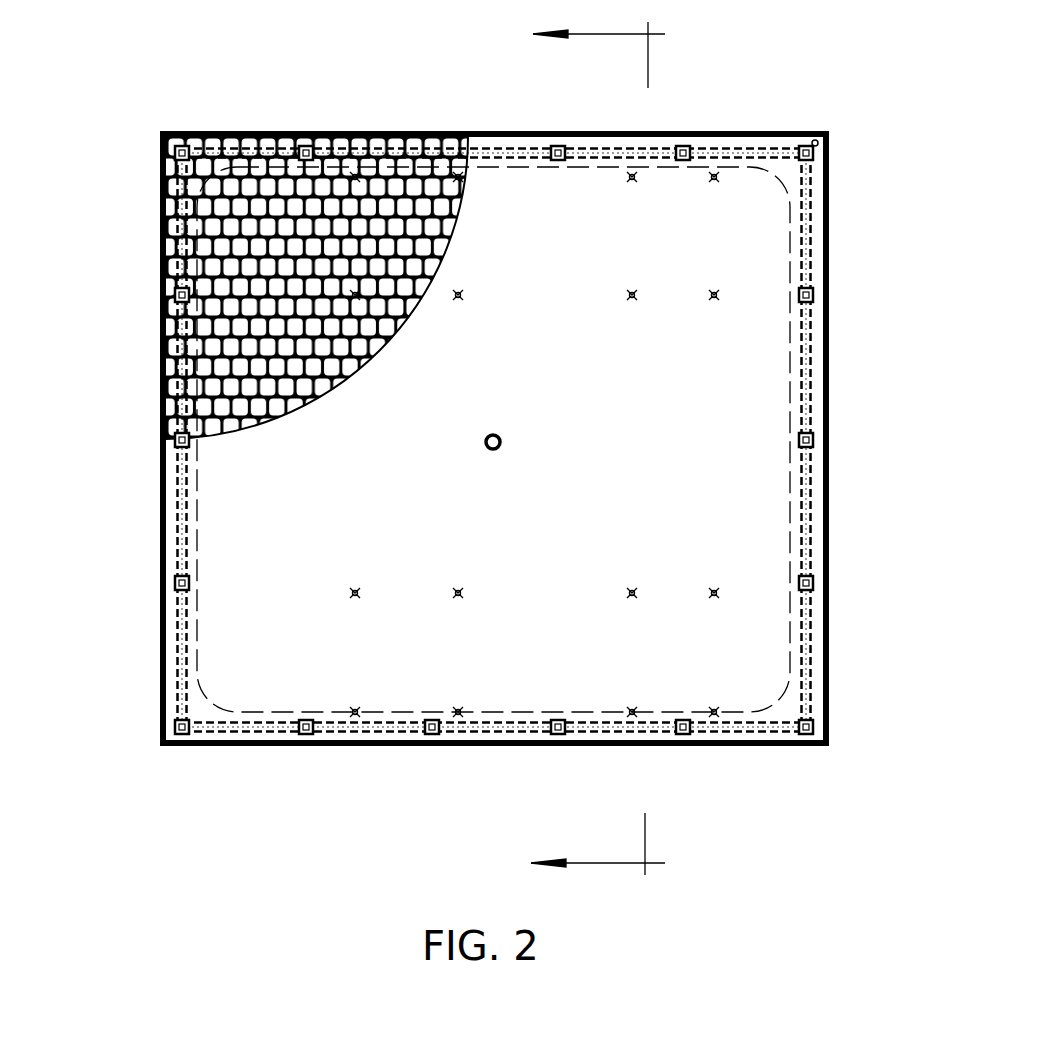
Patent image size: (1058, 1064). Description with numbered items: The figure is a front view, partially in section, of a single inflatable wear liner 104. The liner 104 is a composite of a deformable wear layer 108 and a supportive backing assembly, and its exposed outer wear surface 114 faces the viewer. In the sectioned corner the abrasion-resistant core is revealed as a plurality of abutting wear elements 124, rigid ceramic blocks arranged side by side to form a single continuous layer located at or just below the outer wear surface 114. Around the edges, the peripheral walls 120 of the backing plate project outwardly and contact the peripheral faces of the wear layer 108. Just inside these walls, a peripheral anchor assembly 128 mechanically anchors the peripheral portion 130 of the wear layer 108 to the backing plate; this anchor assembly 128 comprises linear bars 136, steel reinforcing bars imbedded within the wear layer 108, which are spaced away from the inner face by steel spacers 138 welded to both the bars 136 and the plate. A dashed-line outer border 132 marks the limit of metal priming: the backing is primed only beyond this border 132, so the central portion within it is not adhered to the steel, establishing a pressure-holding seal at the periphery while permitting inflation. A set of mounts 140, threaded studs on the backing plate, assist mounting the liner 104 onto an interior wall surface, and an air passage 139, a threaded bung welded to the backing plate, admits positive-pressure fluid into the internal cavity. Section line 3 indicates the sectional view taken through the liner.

The sectional view 3- 3 is at (610, 450).
The inflatable wear liner 104 is at (192, 771).
The deformable wear layer 108 is at (331, 128).
The outer wear surface 114 is at (645, 431).
The peripheral walls 120 is at (795, 130).
The wear elements 124 is at (168, 256).
The peripheral anchor assembly 128 is at (506, 140).
The peripheral portion 130 is at (597, 138).
The outer border 132 is at (792, 240).
The linear bars 136 is at (710, 148).
The steel spacers 138 is at (558, 162).
The air passage 139 is at (492, 452).
The mounts 140 is at (656, 204).